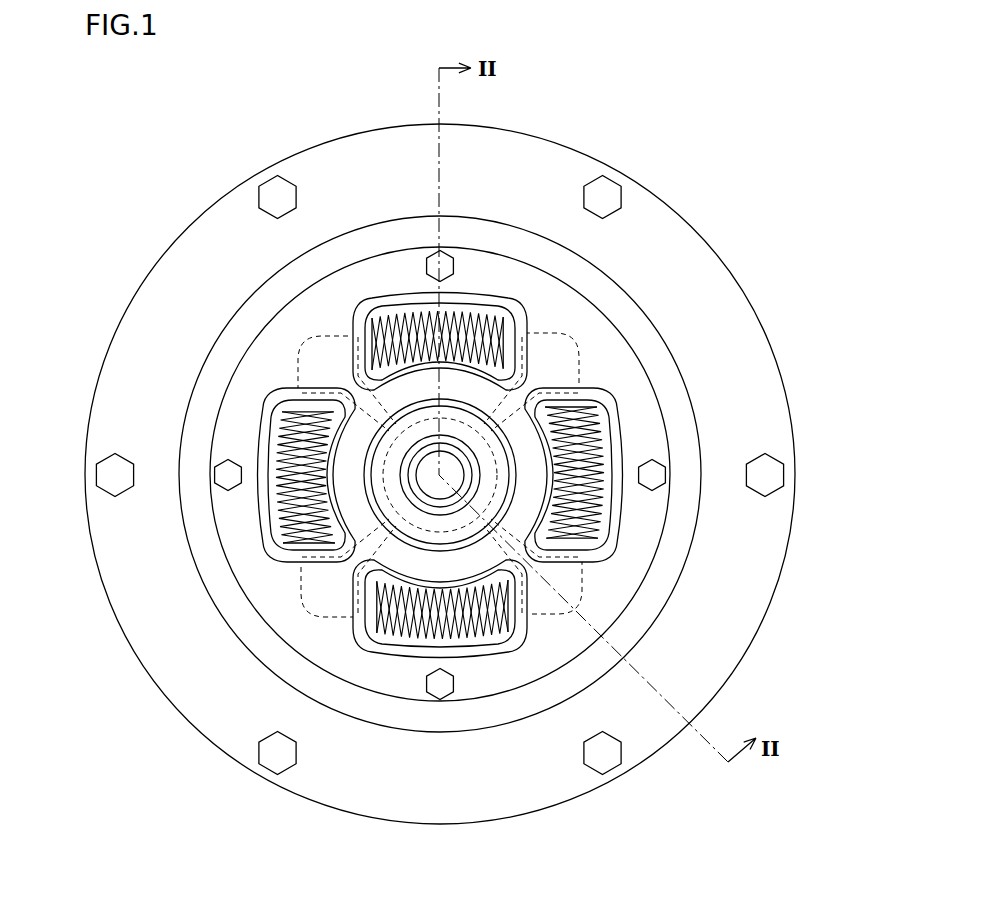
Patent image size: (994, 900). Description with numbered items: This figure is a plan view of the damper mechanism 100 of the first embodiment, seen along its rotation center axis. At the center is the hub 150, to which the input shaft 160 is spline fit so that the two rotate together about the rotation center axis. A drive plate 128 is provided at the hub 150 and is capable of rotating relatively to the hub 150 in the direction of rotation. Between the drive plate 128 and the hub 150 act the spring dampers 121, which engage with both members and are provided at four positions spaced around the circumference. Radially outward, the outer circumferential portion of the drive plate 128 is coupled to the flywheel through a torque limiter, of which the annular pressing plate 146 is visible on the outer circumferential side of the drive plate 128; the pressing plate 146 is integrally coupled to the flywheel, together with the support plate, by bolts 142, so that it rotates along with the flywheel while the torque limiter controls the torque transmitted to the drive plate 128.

The damper mechanism 100 is at (648, 105).
The spring damper 121 is at (487, 318).
The drive plate 128 is at (608, 587).
The bolt 142 is at (602, 755).
The pressing plate 146 is at (437, 795).
The hub 150 is at (462, 458).
The input shaft 160 is at (427, 470).